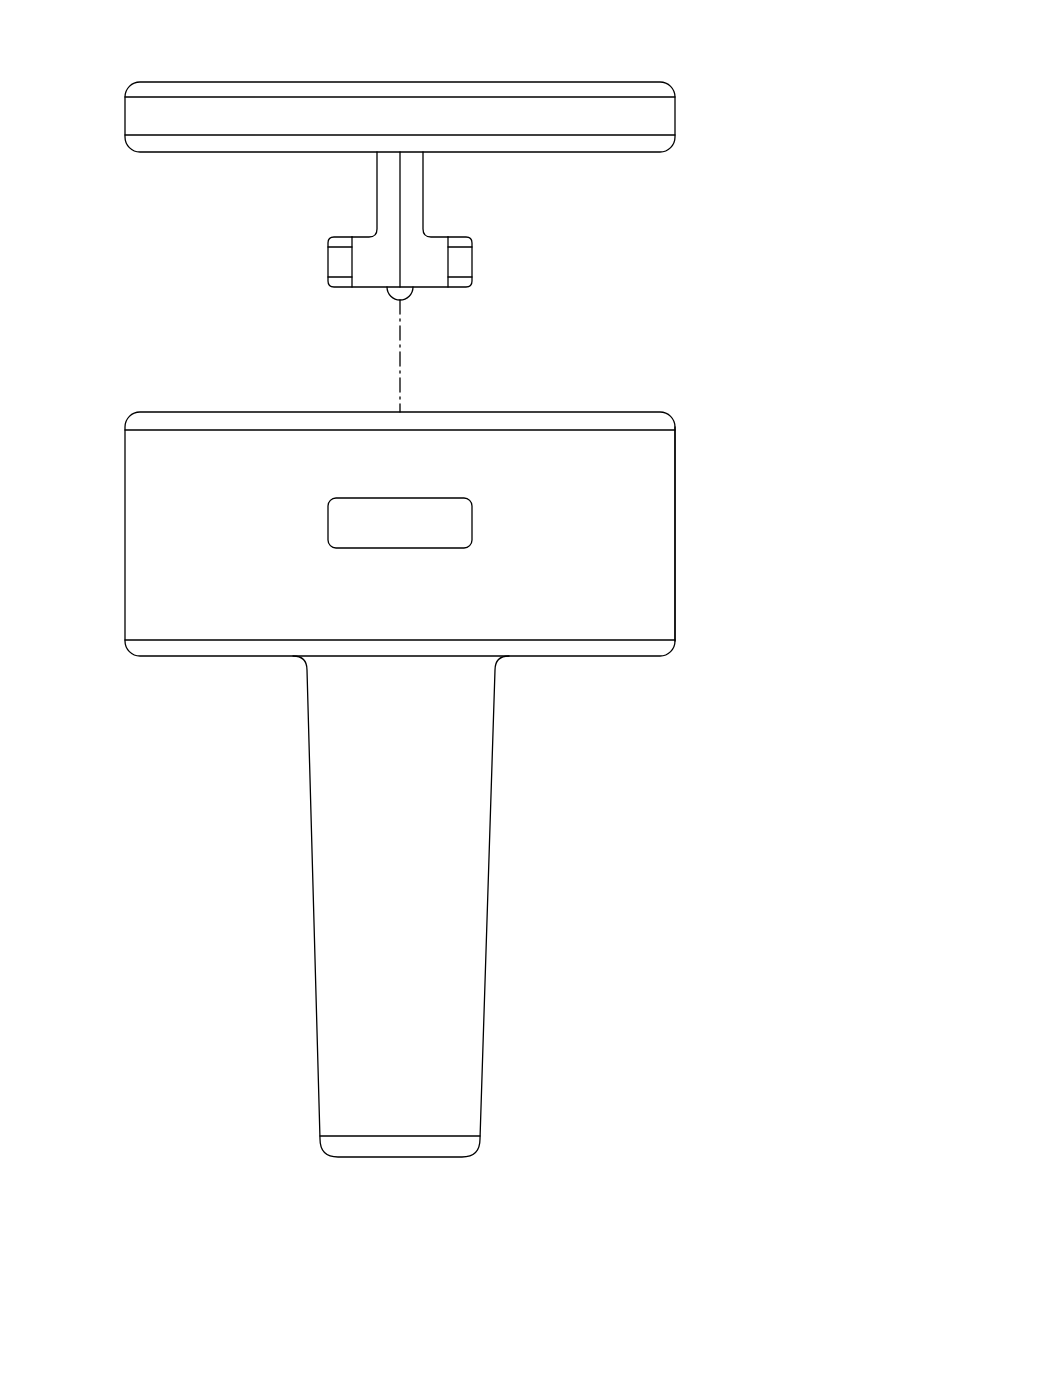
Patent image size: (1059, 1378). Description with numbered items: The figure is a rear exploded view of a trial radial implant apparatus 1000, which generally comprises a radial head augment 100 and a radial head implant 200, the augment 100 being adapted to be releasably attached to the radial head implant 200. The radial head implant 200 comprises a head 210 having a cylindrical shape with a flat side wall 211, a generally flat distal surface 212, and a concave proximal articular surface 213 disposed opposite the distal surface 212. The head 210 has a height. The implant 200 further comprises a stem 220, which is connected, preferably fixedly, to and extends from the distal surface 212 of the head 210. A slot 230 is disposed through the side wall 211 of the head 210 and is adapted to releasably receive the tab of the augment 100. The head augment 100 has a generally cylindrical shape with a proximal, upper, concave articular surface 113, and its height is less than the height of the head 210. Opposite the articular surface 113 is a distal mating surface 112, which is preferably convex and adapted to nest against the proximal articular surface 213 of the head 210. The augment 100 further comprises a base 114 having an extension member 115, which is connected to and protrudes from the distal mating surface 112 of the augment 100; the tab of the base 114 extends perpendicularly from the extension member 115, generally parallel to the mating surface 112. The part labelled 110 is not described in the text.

The trial radial implant apparatus 1000 is at (752, 295).
The radial head augment 100 is at (182, 245).
The cap head 110 is at (675, 117).
The distal mating surface 112 is at (598, 152).
The proximal concave articular surface 113 is at (598, 82).
The base 114 is at (425, 185).
The extension member 115 is at (472, 265).
The radial head implant 200 is at (192, 827).
The head 210 is at (675, 543).
The flat side wall 211 is at (675, 496).
The distal surface 212 is at (593, 657).
The proximal articular surface 213 is at (603, 412).
The stem 220 is at (488, 932).
The slot 230 is at (383, 522).